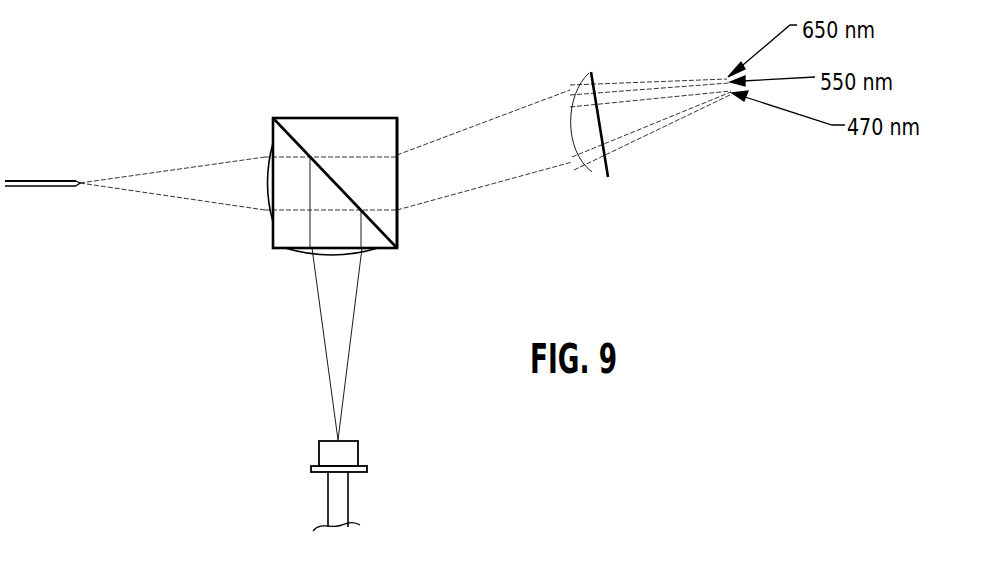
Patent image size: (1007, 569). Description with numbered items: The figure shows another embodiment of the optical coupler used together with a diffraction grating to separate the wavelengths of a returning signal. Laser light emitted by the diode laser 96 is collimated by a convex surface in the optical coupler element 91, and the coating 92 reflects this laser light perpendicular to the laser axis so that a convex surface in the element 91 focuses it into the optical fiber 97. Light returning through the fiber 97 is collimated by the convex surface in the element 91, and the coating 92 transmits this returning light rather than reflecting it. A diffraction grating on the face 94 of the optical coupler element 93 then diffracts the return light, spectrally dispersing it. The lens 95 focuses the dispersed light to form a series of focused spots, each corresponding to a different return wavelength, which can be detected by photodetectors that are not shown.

The optical coupler element 91 is at (276, 249).
The coating 92 is at (290, 133).
The optical coupler element 93 is at (366, 118).
The face 94 is at (398, 220).
The lens 95 is at (593, 177).
The diode laser 96 is at (358, 452).
The optical fiber 97 is at (33, 180).